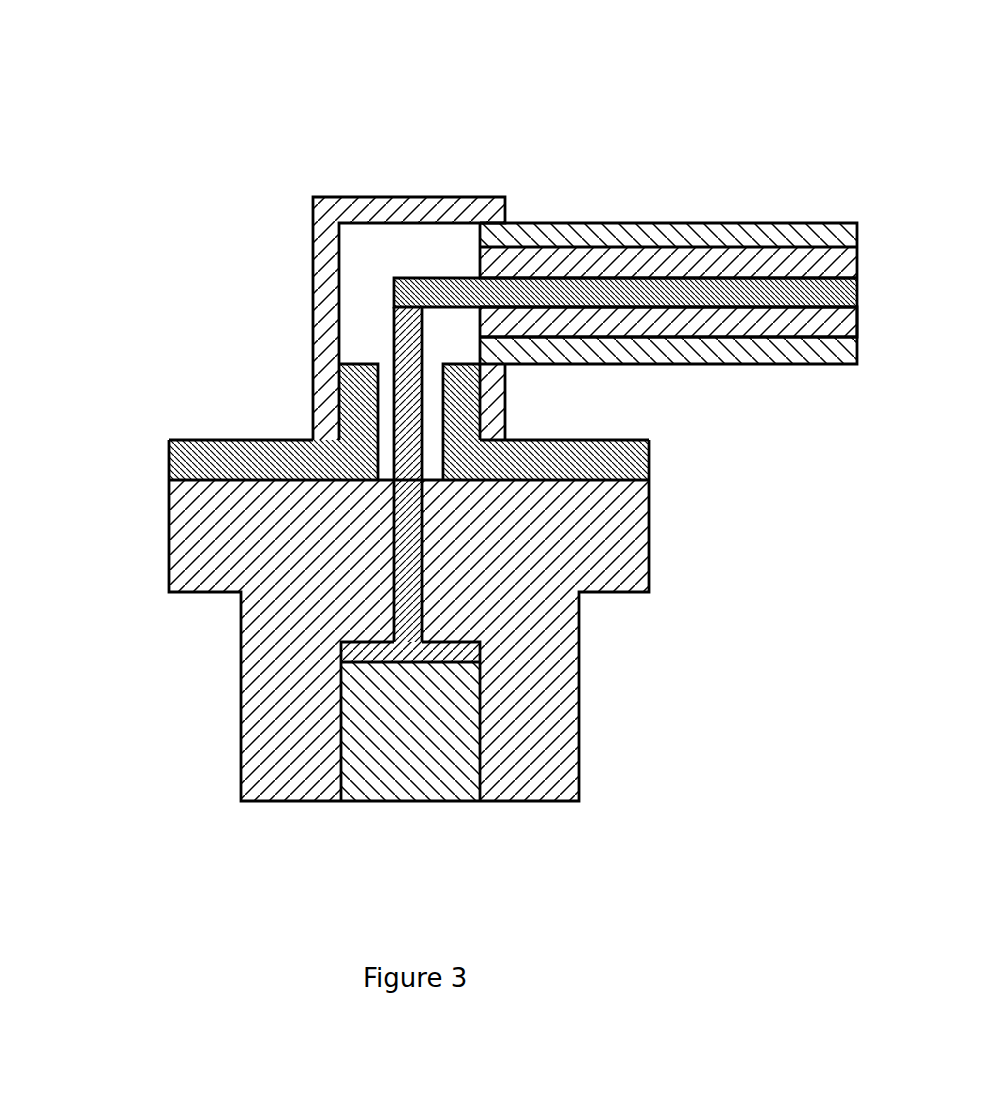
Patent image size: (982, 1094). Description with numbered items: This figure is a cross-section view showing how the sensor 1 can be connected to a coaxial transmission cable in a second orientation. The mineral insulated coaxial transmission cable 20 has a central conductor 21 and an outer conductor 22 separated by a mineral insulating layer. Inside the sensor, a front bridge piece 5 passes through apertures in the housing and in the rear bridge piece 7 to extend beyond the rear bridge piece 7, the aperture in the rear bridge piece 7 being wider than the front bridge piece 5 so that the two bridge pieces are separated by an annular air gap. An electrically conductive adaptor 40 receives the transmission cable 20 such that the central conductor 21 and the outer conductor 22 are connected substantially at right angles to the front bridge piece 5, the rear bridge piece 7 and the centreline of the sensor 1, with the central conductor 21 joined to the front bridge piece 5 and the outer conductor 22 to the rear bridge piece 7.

The sensor 1 is at (140, 413).
The front bridge piece 5 is at (408, 418).
The rear bridge piece 7 is at (265, 447).
The mineral insulated coaxial transmission cable 20 is at (625, 277).
The central conductor 21 is at (430, 295).
The outer conductor 22 is at (759, 322).
The electrically conductive adaptor 40 is at (333, 157).